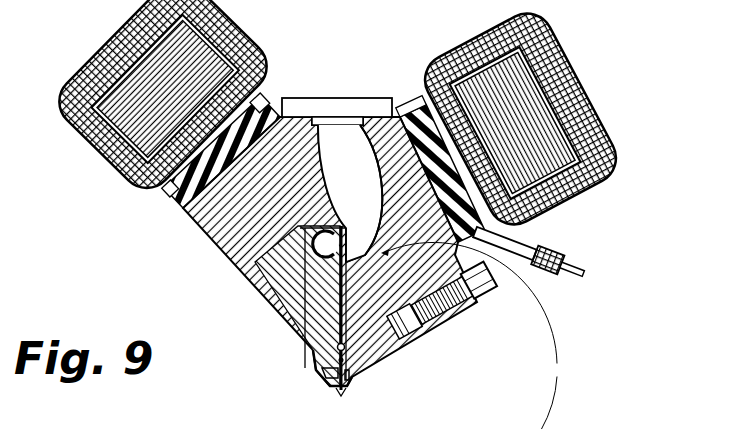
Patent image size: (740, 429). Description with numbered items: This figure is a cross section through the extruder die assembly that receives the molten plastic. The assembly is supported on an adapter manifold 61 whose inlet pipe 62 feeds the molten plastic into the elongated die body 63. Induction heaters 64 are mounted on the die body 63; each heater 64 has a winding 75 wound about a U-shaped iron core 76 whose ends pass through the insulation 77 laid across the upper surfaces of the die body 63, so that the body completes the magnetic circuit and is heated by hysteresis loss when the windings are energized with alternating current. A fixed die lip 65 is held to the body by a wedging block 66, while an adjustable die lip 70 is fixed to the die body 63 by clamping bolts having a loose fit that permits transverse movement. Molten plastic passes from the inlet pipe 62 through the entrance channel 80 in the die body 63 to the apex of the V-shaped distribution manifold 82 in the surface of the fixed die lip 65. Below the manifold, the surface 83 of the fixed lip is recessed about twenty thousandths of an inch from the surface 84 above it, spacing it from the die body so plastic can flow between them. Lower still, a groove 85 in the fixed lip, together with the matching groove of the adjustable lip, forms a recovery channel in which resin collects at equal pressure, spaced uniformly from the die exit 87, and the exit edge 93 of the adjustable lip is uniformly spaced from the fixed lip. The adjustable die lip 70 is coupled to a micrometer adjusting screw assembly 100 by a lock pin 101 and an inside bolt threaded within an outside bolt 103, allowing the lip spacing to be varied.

The adapter manifold 61 is at (367, 98).
The inlet pipe 62 is at (338, 120).
The die body 63 is at (219, 235).
The induction heater 64 is at (101, 48).
The fixed die lip 65 is at (312, 356).
The wedging block 66 is at (275, 311).
The adjustable die lip 70 is at (356, 383).
The winding 75 is at (86, 138).
The iron core 76 is at (233, 34).
The insulation 77 is at (181, 194).
The entrance channel 80 is at (360, 190).
The distribution manifold 82 is at (336, 250).
The recessed surface 83 is at (330, 300).
The surface above the distribution manifold 84 is at (368, 190).
The groove 85 is at (318, 366).
The die exit 87 is at (343, 393).
The exit edge 93 is at (350, 400).
The micrometer adjusting screw assembly 100 is at (459, 317).
The lock pin 101 is at (412, 338).
The outside bolt 103 is at (498, 287).